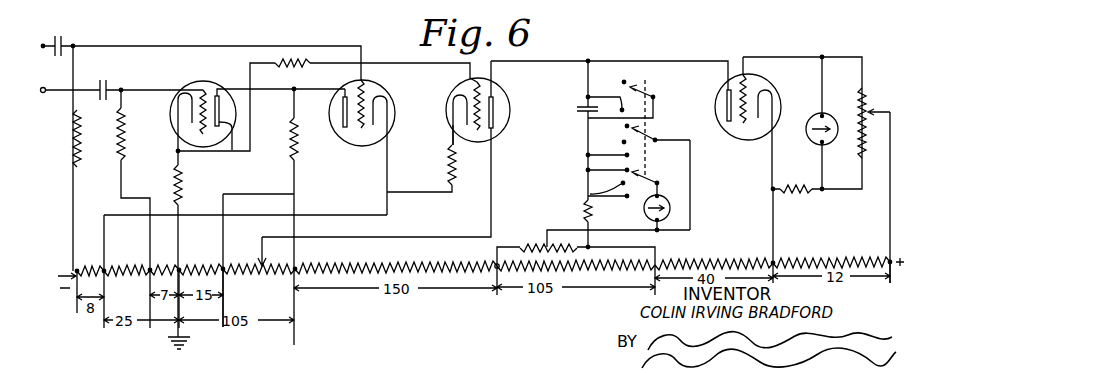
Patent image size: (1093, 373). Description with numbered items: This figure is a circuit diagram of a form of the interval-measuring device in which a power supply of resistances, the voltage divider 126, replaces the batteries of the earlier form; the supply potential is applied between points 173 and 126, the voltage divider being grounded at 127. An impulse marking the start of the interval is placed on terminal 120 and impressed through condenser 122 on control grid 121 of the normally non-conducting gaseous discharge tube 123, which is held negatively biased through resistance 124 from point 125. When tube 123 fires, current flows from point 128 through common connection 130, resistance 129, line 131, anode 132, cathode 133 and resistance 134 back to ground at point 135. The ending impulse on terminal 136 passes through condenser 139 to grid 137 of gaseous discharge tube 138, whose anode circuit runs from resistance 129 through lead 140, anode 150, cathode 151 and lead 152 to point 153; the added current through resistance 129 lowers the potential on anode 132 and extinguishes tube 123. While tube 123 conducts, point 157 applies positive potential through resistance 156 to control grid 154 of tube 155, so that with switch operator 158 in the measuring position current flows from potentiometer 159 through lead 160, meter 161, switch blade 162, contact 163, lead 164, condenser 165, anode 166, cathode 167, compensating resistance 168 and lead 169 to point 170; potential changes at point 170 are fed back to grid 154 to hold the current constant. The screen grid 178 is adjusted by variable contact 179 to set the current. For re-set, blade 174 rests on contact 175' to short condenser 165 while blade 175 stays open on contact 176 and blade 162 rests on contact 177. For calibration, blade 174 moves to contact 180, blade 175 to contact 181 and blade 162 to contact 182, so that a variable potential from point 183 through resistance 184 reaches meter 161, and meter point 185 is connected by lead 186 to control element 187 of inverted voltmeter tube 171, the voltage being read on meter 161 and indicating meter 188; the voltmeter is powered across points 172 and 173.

The terminal 120 is at (44, 93).
The control grid 121 is at (212, 81).
The condenser 122 is at (102, 80).
The gaseous discharge tube 123 is at (172, 128).
The resistance 124 is at (120, 133).
The point of the voltage divider 125 is at (149, 274).
The voltage divider 126 is at (71, 272).
The ground 127 is at (172, 343).
The point on the voltage divider 128 is at (298, 268).
The resistance 129 is at (287, 143).
The common connection 130 is at (293, 182).
The line 131 is at (283, 97).
The anode 132 is at (228, 135).
The cathode 133 is at (171, 98).
The resistance 134 is at (175, 187).
The point on the voltage divider 135 is at (182, 268).
The terminal 136 is at (43, 40).
The grid 137 is at (355, 133).
The gaseous discharge tube 138 is at (362, 148).
The condenser 139 is at (66, 35).
The lead 140 is at (325, 97).
The anode 150 is at (343, 117).
The cathode 151 is at (386, 97).
The lead 152 is at (393, 185).
The point on the voltage divider 153 is at (107, 268).
The control grid 154 is at (478, 141).
The tube 155 is at (450, 126).
The resistance 156 is at (290, 58).
The point 157 is at (174, 151).
The switch operator 158 is at (648, 128).
The potentiometer 159 is at (536, 246).
The lead 160 is at (611, 229).
The meter 161 is at (670, 202).
The switch blade 162 is at (653, 178).
The contact 163 is at (624, 169).
The lead 164 is at (586, 141).
The condenser 165 is at (583, 103).
The anode 166 is at (500, 99).
The cathode 167 is at (452, 100).
The compensating resistance 168 is at (443, 164).
The lead 169 is at (355, 198).
The point on the voltage divider 170 is at (226, 274).
The inverted voltmeter tube 171 is at (788, 82).
The point 172 is at (777, 261).
The point 173 is at (888, 258).
The switch blade 174 is at (634, 86).
The switch blade 175 is at (688, 131).
The contact 175' is at (610, 81).
The contact 176 is at (621, 142).
The contact 177 is at (593, 187).
The screen grid 178 is at (500, 118).
The variable contact 179 is at (256, 262).
The contact 180 is at (622, 107).
The contact 181 is at (624, 154).
The contact 182 is at (611, 207).
The point 183 is at (652, 259).
The resistance 184 is at (579, 216).
The point of the meter 185 is at (661, 232).
The lead 186 is at (691, 170).
The control element 187 is at (727, 101).
The indicating meter 188 is at (812, 141).